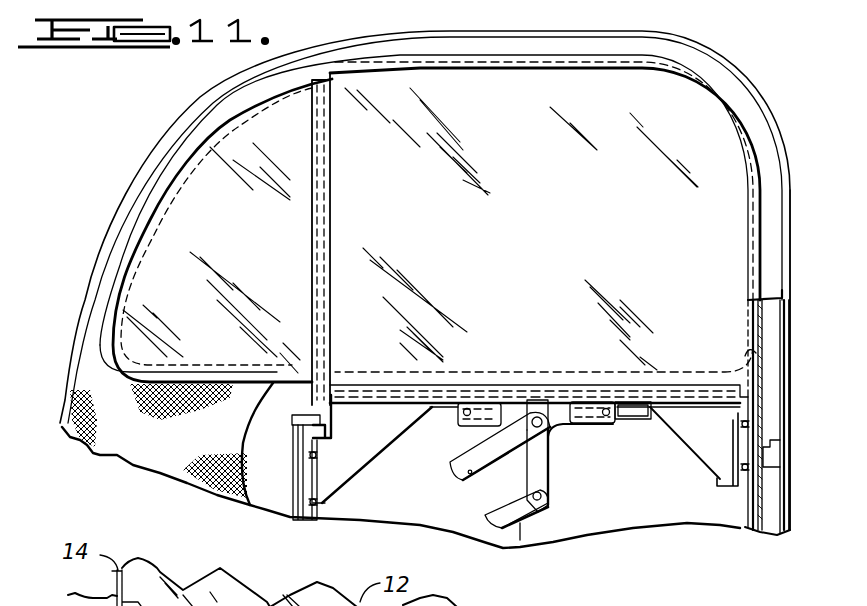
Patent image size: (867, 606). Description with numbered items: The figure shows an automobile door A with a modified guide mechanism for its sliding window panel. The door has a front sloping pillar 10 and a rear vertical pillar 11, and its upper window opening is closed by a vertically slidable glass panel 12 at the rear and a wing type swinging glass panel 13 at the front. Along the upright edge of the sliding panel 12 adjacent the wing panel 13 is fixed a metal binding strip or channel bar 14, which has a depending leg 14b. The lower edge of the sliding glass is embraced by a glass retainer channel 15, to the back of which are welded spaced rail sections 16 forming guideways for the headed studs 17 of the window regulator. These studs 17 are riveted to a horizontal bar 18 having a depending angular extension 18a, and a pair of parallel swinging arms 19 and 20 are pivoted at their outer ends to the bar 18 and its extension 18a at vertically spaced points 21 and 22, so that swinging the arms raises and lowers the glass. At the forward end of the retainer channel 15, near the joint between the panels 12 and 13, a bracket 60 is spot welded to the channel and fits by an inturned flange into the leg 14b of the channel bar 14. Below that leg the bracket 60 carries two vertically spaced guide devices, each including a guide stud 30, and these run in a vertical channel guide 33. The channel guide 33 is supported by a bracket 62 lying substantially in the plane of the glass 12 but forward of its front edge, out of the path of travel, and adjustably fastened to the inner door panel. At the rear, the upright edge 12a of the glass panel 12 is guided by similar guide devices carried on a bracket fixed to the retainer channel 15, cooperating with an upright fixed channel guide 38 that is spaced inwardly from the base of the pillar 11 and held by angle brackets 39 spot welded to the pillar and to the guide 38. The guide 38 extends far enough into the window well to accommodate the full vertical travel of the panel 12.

The automobile door A is at (535, 40).
The front sloping pillar 10 is at (128, 211).
The rear vertical pillar 11 is at (770, 249).
The sliding panel 12 is at (500, 226).
The upright edge of the glass 12a is at (752, 353).
The swinging panel 13 is at (250, 252).
The metal binding strip or bar 14 is at (331, 294).
The depending extension or leg of the channel bar 14b is at (333, 424).
The glass retainer channel 15 is at (553, 390).
The rail sections 16 is at (627, 422).
The regulator studs 17 is at (607, 426).
The horizontal bar 18 is at (560, 408).
The depending angular extension 18a is at (548, 480).
The swinging arm 19 is at (465, 480).
The swinging arm 20 is at (520, 540).
The pivot point 21 is at (537, 410).
The pivot point 22 is at (549, 507).
The guide stud 30 is at (742, 483).
The vertical channel guide 33 is at (288, 508).
The fixed guide member 38 is at (758, 508).
The angle brackets 39 is at (780, 440).
The bracket 60 is at (367, 468).
The bracket 62 is at (710, 482).